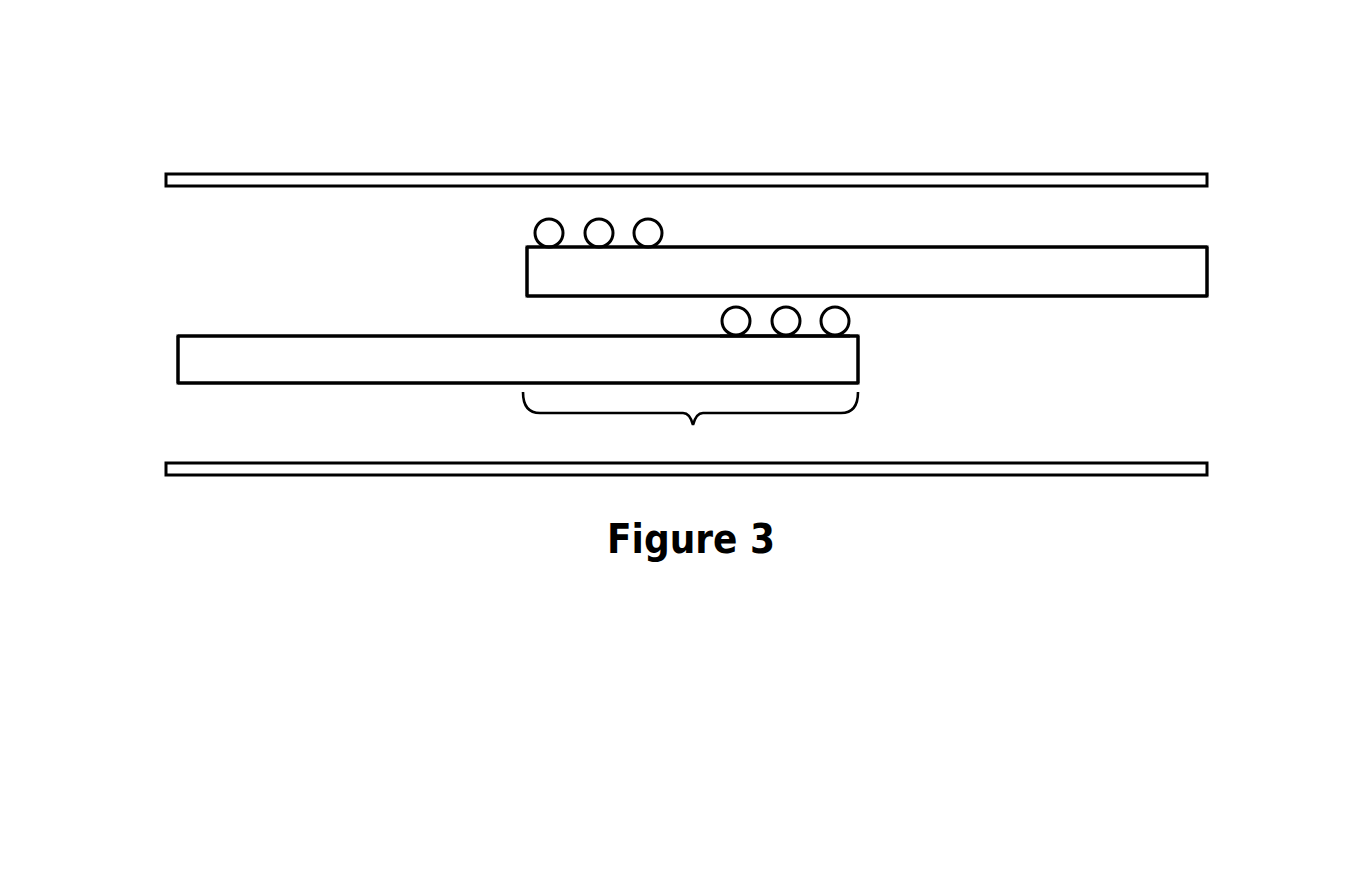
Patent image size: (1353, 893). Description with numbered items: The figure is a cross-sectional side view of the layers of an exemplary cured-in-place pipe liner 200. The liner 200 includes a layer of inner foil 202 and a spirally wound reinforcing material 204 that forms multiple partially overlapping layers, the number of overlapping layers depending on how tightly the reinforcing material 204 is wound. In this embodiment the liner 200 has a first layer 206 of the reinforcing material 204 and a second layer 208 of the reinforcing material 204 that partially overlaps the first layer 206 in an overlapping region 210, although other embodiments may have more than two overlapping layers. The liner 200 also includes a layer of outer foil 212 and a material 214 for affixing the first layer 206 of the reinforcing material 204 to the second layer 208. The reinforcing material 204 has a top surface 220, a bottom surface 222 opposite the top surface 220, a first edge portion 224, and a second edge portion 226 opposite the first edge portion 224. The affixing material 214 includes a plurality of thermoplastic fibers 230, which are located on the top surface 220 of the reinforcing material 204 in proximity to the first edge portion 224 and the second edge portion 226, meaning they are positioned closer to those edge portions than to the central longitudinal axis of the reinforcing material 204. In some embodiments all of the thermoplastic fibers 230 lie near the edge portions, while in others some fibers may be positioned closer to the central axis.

The liner 200 is at (702, 271).
The inner foil 202 is at (744, 477).
The reinforcing material 204 is at (690, 318).
The first layer 206 is at (130, 363).
The second layer 208 is at (1242, 241).
The overlapping region 210 is at (690, 425).
The outer foil 212 is at (744, 164).
The material for affixing 214 is at (716, 319).
The top surface 220 is at (692, 263).
The bottom surface 222 is at (692, 372).
The first edge portion 224 is at (452, 271).
The second edge portion 226 is at (925, 359).
The thermoplastic fibers 230 is at (747, 270).